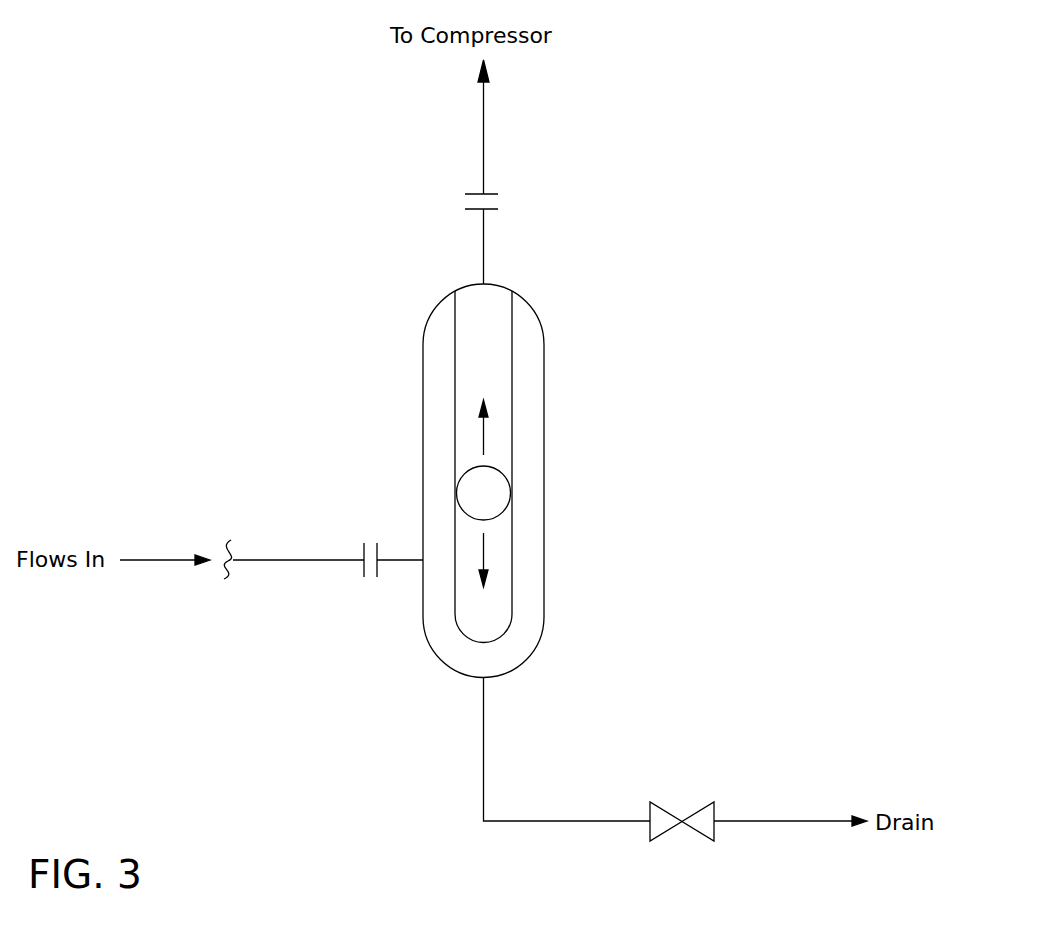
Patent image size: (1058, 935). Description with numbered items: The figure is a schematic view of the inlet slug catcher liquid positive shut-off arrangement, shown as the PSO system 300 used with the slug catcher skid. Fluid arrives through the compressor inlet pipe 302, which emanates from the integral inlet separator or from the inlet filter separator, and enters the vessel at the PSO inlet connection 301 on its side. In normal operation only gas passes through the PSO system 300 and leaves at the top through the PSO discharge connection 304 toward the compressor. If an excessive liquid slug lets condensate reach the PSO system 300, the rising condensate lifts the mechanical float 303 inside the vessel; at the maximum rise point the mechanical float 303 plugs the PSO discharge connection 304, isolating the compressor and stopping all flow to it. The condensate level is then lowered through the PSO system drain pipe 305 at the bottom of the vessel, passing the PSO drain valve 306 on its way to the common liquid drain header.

The PSO system 300 is at (544, 345).
The PSO inlet connection 301 is at (375, 577).
The compressor inlet pipe 302 is at (262, 560).
The mechanical float 303 is at (490, 497).
The PSO discharge connection 304 is at (467, 207).
The PSO system drain pipe 305 is at (515, 821).
The PSO drain valve 306 is at (667, 805).